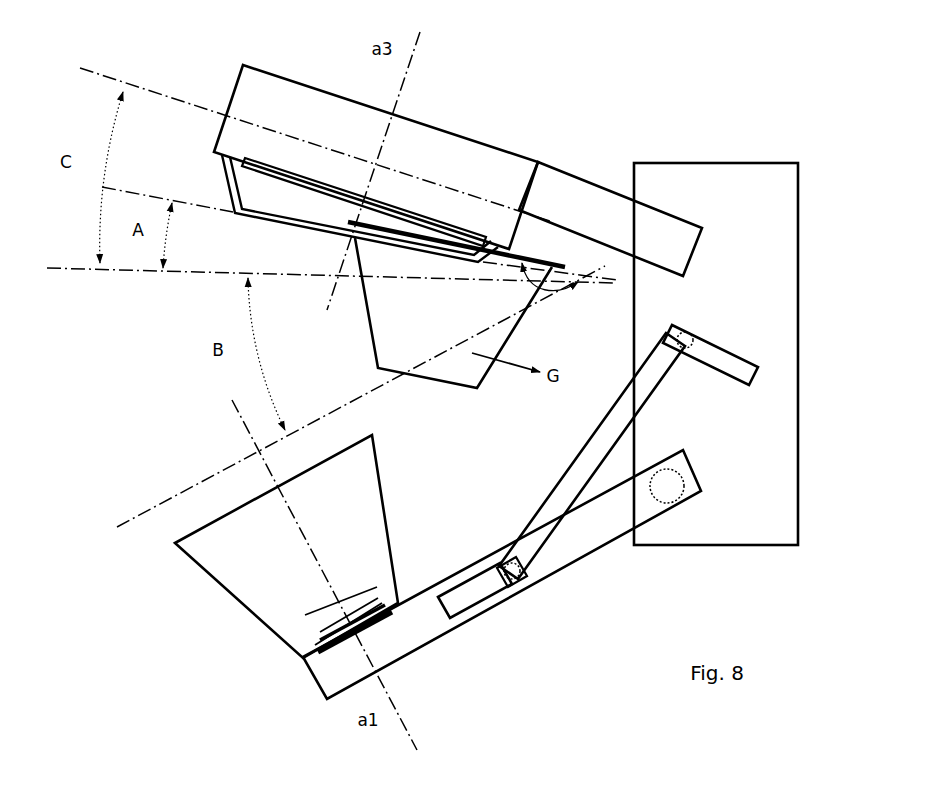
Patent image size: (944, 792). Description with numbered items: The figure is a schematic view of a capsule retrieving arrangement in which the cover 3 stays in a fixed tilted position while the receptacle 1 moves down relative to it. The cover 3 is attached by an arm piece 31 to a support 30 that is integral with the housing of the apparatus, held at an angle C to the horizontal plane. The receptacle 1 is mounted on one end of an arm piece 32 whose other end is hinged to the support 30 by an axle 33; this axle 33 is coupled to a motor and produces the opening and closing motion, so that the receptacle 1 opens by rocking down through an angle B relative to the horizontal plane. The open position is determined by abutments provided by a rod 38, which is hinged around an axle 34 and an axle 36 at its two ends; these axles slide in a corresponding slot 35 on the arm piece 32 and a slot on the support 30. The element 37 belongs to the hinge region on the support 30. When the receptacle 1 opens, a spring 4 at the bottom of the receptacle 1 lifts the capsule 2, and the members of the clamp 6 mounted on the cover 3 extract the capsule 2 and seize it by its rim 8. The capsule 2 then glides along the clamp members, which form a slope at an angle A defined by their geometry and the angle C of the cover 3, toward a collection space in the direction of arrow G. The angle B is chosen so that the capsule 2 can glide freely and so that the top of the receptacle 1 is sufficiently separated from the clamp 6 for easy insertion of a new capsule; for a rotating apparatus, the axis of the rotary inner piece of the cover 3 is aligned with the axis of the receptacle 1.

The receptacle 1 is at (243, 577).
The capsule 2 is at (402, 320).
The cover 3 is at (408, 145).
The spring 4 is at (310, 630).
The clamp 6 is at (230, 183).
The rim 8 is at (540, 288).
The support 30 is at (745, 200).
The arm piece 31 is at (575, 205).
The arm piece 32 is at (597, 530).
The axle 33 is at (670, 483).
The axle 34 is at (508, 572).
The slot 35 is at (472, 590).
The axle 36 is at (687, 338).
The bracket 37 is at (740, 368).
The rod 38 is at (587, 463).